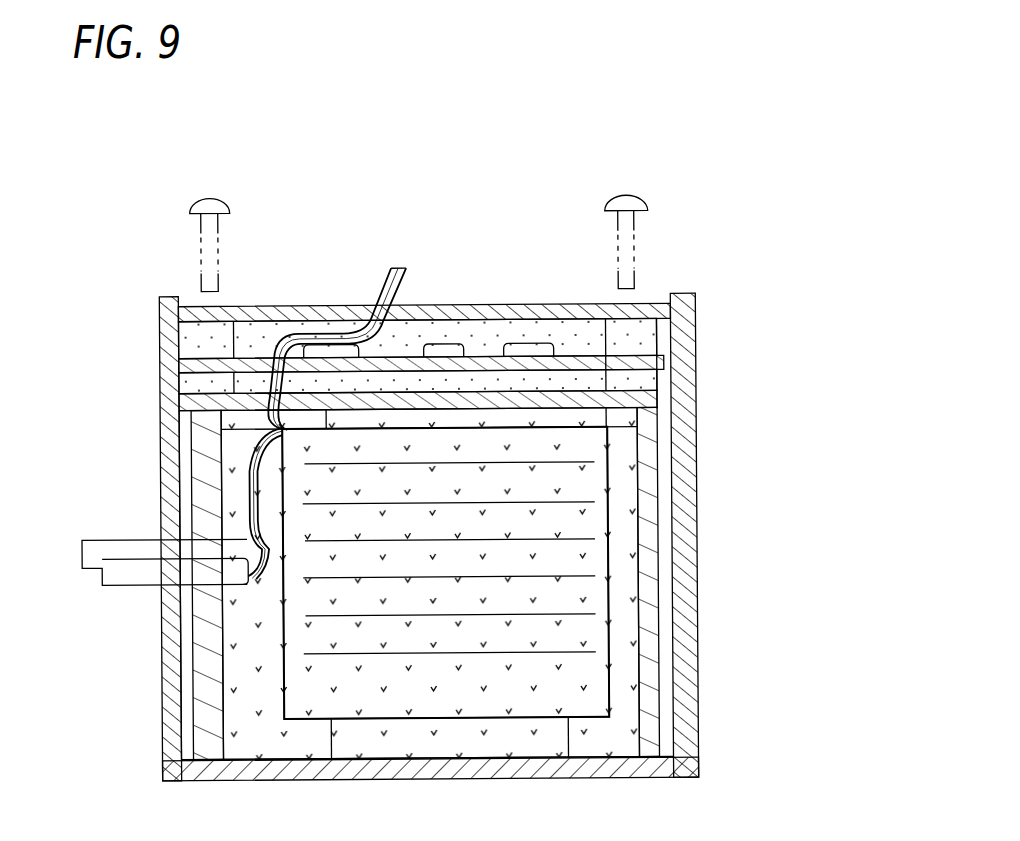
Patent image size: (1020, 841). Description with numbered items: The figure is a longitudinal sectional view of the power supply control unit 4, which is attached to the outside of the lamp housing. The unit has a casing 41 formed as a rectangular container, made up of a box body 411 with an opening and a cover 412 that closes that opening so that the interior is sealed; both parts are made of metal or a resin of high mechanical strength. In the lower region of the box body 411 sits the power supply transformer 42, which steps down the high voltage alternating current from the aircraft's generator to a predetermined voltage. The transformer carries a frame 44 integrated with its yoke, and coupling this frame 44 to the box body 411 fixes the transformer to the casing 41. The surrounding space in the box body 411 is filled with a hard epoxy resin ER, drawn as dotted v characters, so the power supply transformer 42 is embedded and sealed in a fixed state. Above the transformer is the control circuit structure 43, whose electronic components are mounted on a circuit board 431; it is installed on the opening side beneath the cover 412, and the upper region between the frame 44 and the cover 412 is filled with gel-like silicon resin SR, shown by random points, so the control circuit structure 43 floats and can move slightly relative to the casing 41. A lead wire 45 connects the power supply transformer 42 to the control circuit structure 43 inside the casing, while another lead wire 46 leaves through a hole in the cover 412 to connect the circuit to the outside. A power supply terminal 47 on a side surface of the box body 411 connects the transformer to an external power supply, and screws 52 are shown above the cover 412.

The power supply control unit 4 is at (690, 279).
The casing 41 is at (697, 660).
The box body 411 is at (684, 736).
The cover 412 is at (240, 305).
The power supply transformer 42 is at (613, 490).
The control circuit structure 43 is at (366, 315).
The circuit board 431 is at (235, 366).
The frame 44 is at (665, 412).
The lead wire 45 is at (250, 480).
The lead wire 46 is at (381, 284).
The power supply terminal 47 is at (133, 572).
The screw 52 is at (208, 190).
The silicon resin SR is at (585, 348).
The epoxy resin ER is at (567, 573).